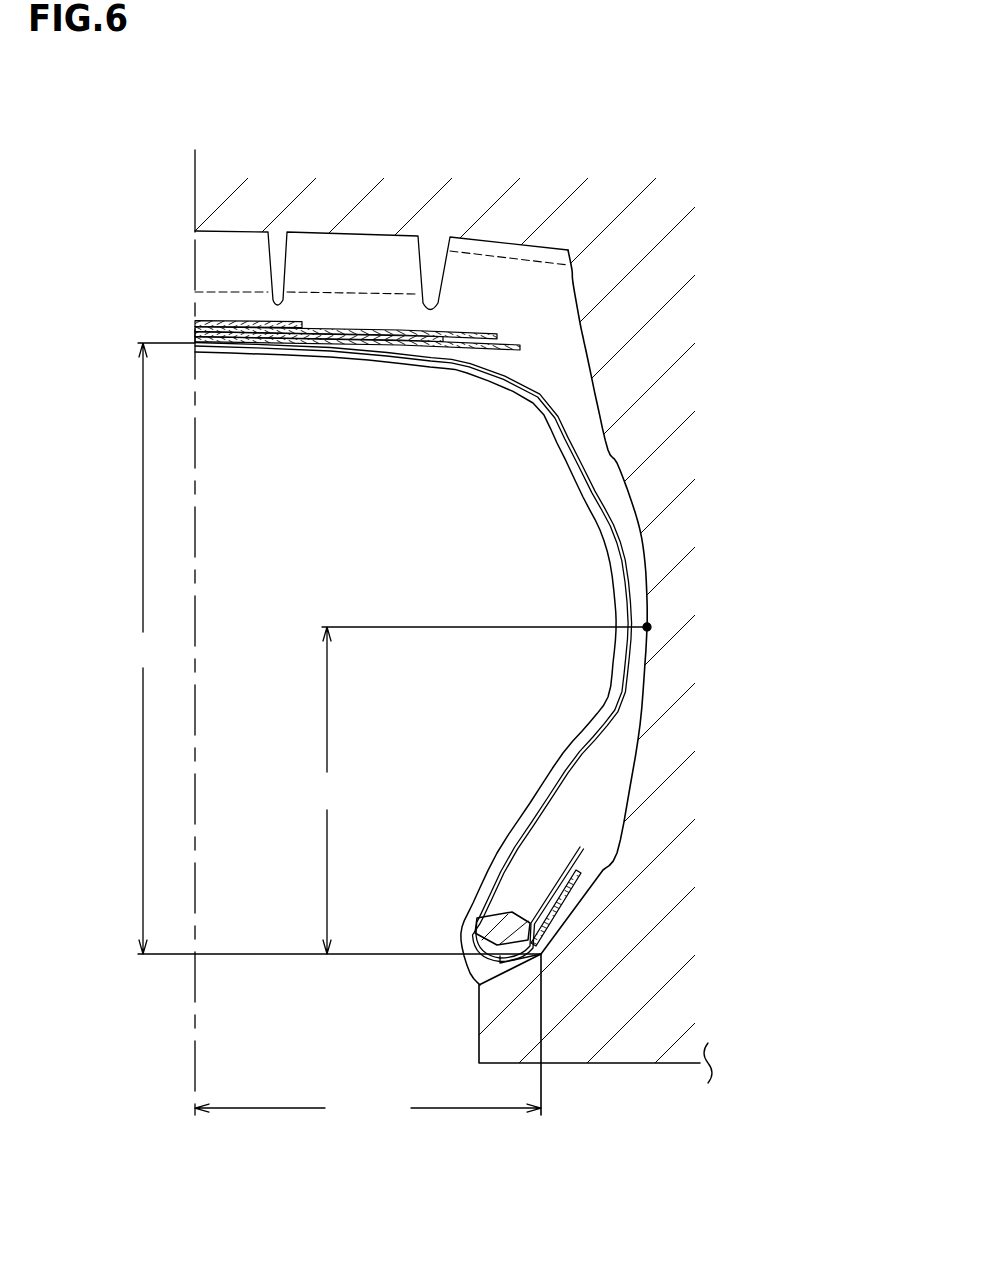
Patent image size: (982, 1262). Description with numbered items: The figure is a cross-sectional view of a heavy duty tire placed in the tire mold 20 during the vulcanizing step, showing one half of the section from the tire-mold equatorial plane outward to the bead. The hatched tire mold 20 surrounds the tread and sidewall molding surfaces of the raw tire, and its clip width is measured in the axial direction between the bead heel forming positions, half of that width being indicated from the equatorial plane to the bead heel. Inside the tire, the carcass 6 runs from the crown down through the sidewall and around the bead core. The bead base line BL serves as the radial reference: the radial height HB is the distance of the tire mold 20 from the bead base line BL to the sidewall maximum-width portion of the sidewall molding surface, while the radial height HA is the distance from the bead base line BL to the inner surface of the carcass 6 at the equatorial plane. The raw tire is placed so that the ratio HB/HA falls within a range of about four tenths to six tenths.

The tire mold 20 is at (722, 262).
The carcass 6 is at (562, 427).
The radial height of inner surface of carcass HA is at (158, 648).
The radial height HB is at (479, 788).
The bead base line BL is at (422, 955).